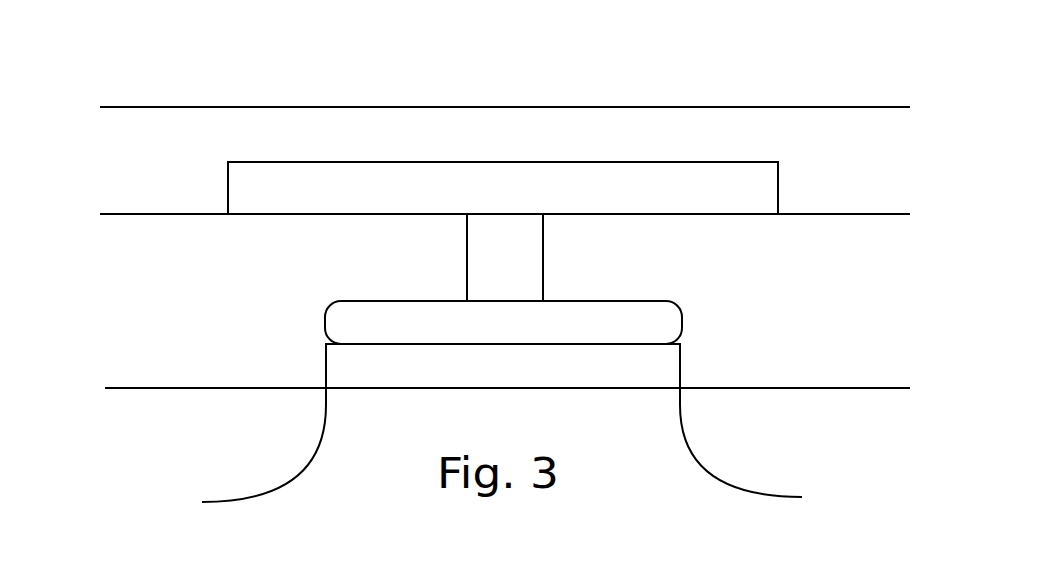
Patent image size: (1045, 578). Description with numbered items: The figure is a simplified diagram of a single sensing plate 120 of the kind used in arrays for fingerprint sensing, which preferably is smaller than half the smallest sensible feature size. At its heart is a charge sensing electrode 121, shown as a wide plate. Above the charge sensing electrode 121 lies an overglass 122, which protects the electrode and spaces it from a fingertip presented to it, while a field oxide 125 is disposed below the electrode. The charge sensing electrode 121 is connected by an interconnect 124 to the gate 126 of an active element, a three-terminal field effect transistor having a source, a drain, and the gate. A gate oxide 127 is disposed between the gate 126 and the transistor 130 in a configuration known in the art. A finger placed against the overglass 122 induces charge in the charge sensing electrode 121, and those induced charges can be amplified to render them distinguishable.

The sensing plate 120 is at (825, 102).
The charge sensing electrode 121 is at (414, 186).
The overglass 122 is at (218, 132).
The interconnect 124 is at (478, 295).
The field oxide 125 is at (172, 243).
The gate 126 is at (362, 316).
The gate oxide 127 is at (337, 375).
The transistor 130 is at (312, 487).